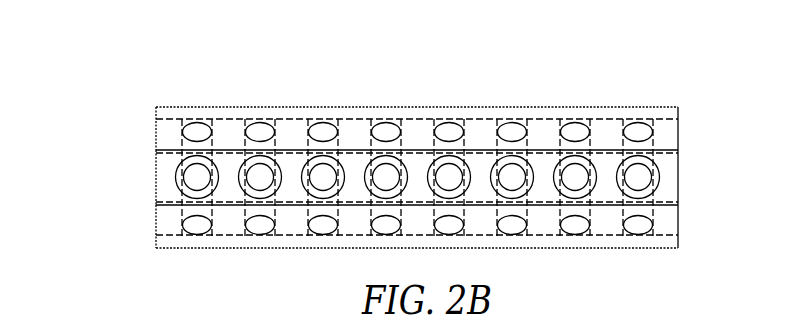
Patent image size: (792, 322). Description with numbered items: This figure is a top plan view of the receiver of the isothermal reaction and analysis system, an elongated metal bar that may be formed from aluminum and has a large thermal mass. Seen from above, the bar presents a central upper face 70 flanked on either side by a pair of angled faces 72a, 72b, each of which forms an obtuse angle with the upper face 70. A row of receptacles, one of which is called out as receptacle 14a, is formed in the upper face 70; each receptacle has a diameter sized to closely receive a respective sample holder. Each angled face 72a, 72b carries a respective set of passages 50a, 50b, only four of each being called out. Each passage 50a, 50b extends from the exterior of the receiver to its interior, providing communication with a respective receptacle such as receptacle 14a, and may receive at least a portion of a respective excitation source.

The receptacle 14a is at (190, 175).
The passages 50a is at (386, 235).
The passages 50b is at (197, 122).
The upper face 70 is at (667, 181).
The angled face 72a is at (667, 222).
The angled face 72b is at (667, 132).